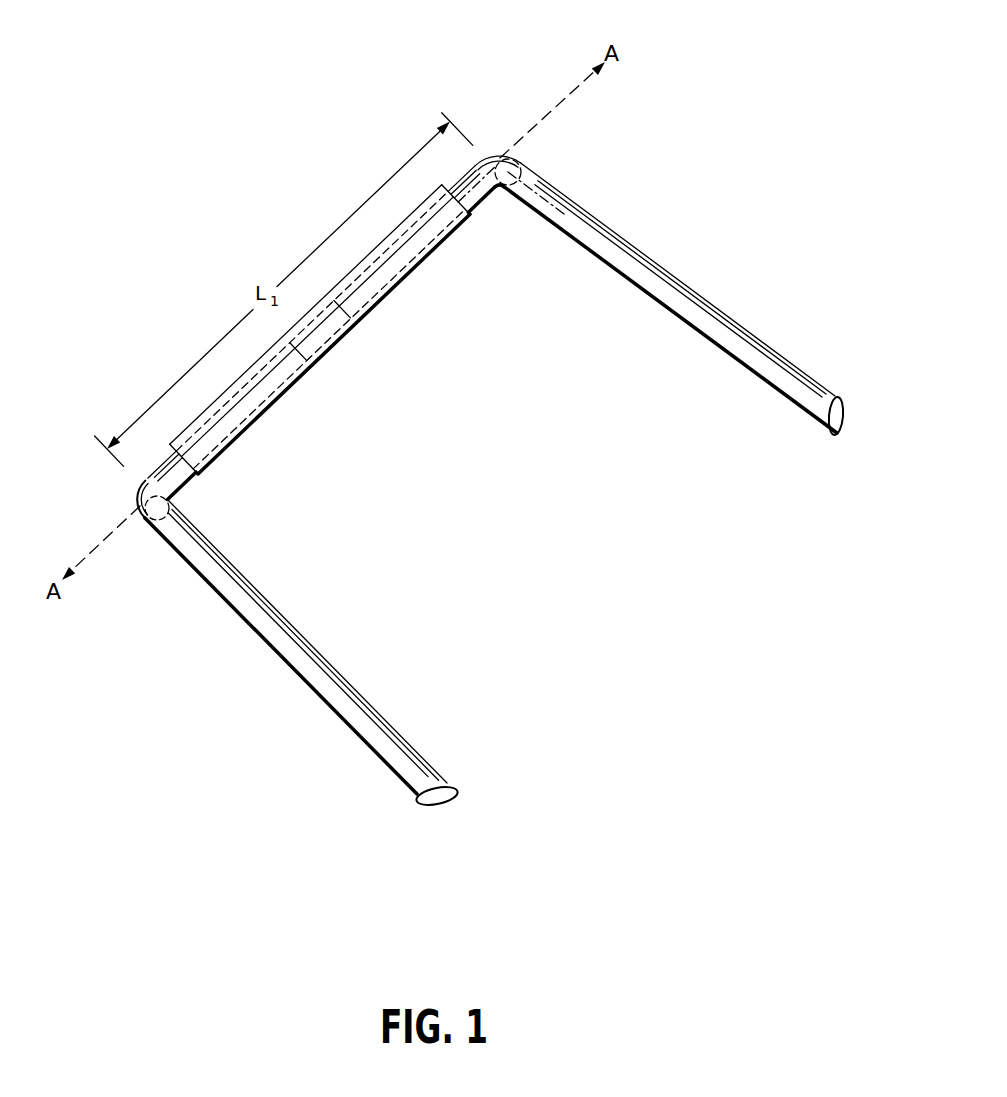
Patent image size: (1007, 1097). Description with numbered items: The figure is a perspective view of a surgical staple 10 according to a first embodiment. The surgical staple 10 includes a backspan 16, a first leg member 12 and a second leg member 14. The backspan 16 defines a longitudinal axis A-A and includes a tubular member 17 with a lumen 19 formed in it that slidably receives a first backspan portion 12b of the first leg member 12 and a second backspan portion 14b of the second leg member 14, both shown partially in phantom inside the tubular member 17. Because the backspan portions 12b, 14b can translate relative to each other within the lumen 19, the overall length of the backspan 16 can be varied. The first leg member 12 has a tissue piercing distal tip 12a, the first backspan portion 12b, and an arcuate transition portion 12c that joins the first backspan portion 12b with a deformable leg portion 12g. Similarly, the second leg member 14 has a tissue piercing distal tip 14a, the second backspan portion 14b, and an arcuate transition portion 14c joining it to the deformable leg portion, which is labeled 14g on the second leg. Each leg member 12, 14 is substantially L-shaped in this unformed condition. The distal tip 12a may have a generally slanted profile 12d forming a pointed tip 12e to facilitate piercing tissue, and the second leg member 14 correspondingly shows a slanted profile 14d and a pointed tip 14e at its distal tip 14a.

The surgical staple 10 is at (340, 88).
The first leg member 12 is at (303, 653).
The tissue piercing distal tip 12a is at (479, 780).
The first backspan portion 12b is at (241, 403).
The transition portion 12c is at (152, 488).
The slanted profile 12d is at (437, 795).
The pointed tip 12e is at (457, 798).
The deformable leg portion 12g is at (340, 723).
The second leg member 14 is at (625, 258).
The tissue piercing distal tip 14a is at (822, 455).
The second backspan portion 14b is at (436, 226).
The transition portion 14c is at (487, 168).
The second tube opening 14d is at (836, 418).
The second tube end face 14e is at (839, 433).
The second tube outer surface 14g is at (737, 345).
The backspan 16 is at (361, 355).
The tubular member 17 is at (206, 469).
The lumen 19 is at (296, 349).